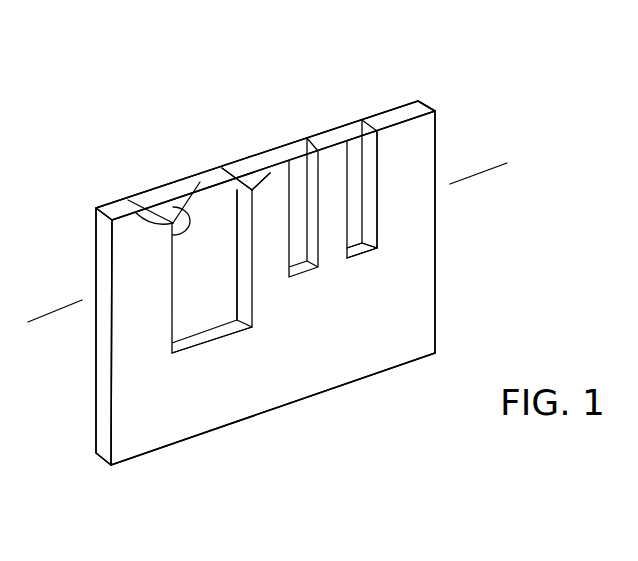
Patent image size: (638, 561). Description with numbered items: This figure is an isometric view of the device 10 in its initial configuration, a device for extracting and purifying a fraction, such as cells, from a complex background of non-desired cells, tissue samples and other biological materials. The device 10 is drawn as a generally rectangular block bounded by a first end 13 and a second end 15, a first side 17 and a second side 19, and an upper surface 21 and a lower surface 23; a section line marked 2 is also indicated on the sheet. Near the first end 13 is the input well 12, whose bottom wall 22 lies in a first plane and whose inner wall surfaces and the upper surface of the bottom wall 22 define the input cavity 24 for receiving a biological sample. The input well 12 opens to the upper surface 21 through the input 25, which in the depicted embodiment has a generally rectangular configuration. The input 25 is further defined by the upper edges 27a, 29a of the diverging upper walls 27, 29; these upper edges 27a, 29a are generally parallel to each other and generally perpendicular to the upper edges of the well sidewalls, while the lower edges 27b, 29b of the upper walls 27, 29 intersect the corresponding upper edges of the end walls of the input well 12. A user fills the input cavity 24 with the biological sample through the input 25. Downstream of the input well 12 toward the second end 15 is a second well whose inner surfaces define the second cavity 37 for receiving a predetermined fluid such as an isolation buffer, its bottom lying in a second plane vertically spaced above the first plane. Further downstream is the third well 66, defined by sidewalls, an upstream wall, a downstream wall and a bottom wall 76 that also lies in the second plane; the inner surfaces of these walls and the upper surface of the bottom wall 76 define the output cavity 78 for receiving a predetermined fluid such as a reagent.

The device 10 is at (382, 423).
The input well 12 is at (159, 352).
The first end 13 is at (102, 383).
The second end 15 is at (436, 230).
The first side 17 is at (142, 190).
The second side 19 is at (162, 427).
The upper surface 21 is at (247, 165).
The bottom wall 22 is at (210, 350).
The lower surface 23 is at (360, 380).
The input cavity 24 is at (190, 283).
The input 25 is at (195, 185).
The first diverging upper wall 27 is at (173, 235).
The upper edge of first diverging upper wall 27a is at (163, 192).
The lower edge of first diverging upper wall 27b is at (130, 213).
The second diverging upper wall 29 is at (237, 190).
The upper edge of second diverging upper wall 29a is at (229, 168).
The lower edge of second diverging upper wall 29b is at (270, 174).
The second cavity 37 is at (323, 190).
The third well 66 is at (384, 244).
The bottom wall of third well 76 is at (372, 246).
The output cavity 78 is at (380, 163).
The section line 2- 2 is at (482, 160).